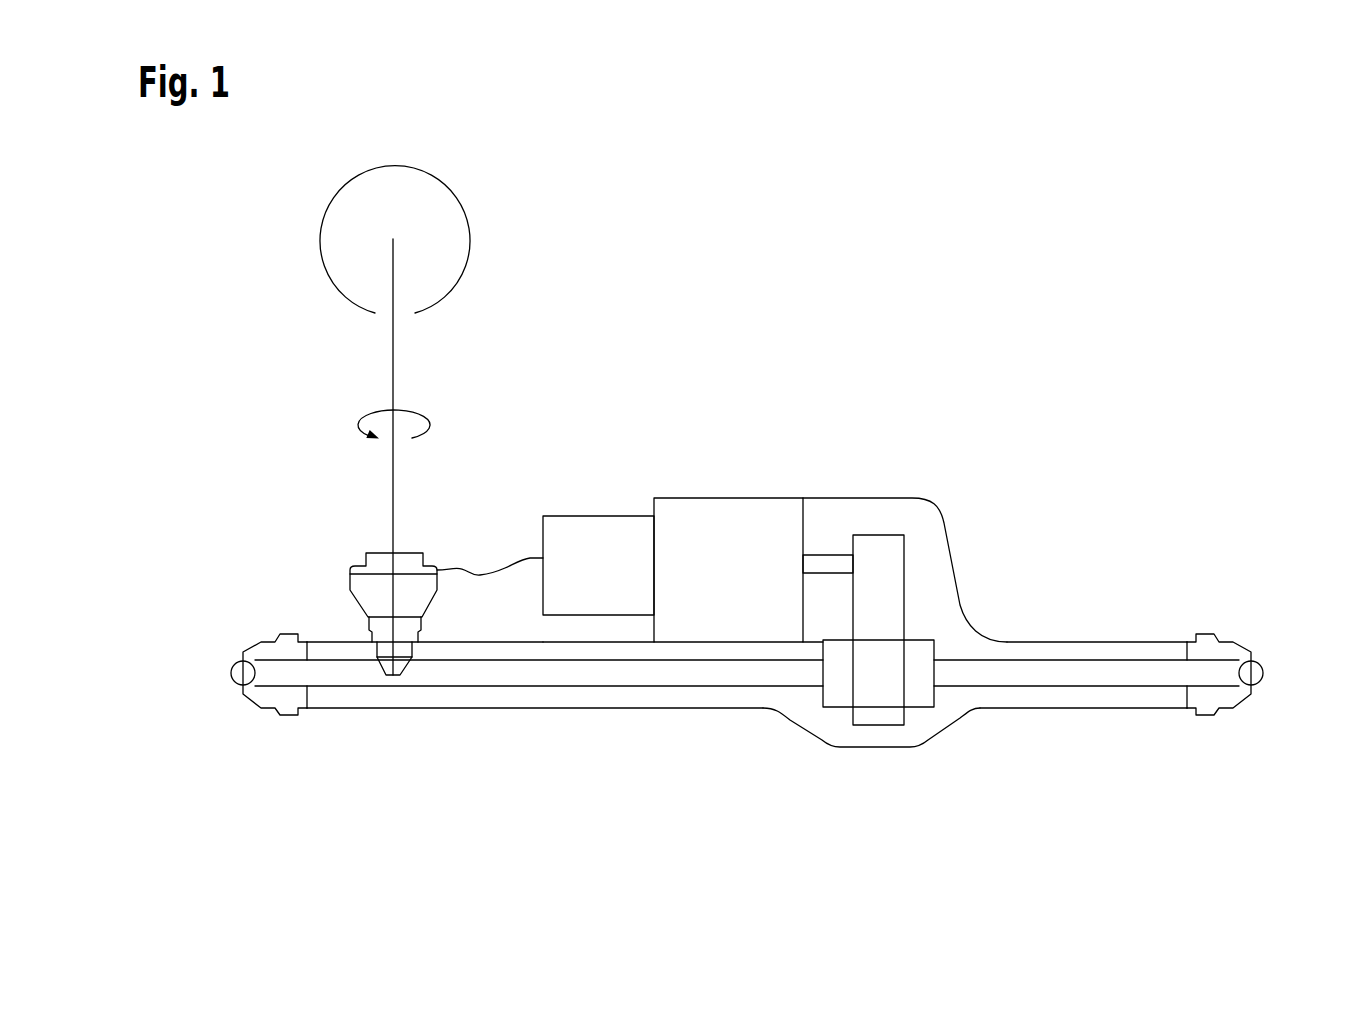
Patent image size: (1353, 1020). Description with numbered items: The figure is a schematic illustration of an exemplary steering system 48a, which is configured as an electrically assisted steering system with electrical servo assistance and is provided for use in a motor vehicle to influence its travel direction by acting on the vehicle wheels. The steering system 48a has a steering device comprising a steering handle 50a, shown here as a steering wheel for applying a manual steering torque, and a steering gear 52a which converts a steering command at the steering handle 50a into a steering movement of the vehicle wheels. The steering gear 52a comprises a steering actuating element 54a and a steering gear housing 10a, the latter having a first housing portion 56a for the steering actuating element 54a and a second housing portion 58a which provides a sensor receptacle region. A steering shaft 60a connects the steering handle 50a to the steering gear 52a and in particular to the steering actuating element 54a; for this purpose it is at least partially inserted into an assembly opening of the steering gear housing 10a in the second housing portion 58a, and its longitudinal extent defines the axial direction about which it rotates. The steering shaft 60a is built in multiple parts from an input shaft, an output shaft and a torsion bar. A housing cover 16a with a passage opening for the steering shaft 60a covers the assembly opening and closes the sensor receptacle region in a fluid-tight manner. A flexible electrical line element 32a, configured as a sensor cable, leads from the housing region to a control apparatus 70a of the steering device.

The steering gear housing 10a is at (1007, 601).
The housing cover 16a is at (368, 537).
The electrical line element 32a is at (477, 573).
The steering system 48a is at (1002, 294).
The steering handle 50a is at (512, 219).
The steering gear 52a is at (987, 555).
The steering actuating element 54a is at (585, 677).
The first housing portion 56a is at (467, 712).
The second housing portion 58a is at (336, 570).
The steering shaft 60a is at (452, 392).
The control apparatus 70a is at (595, 532).